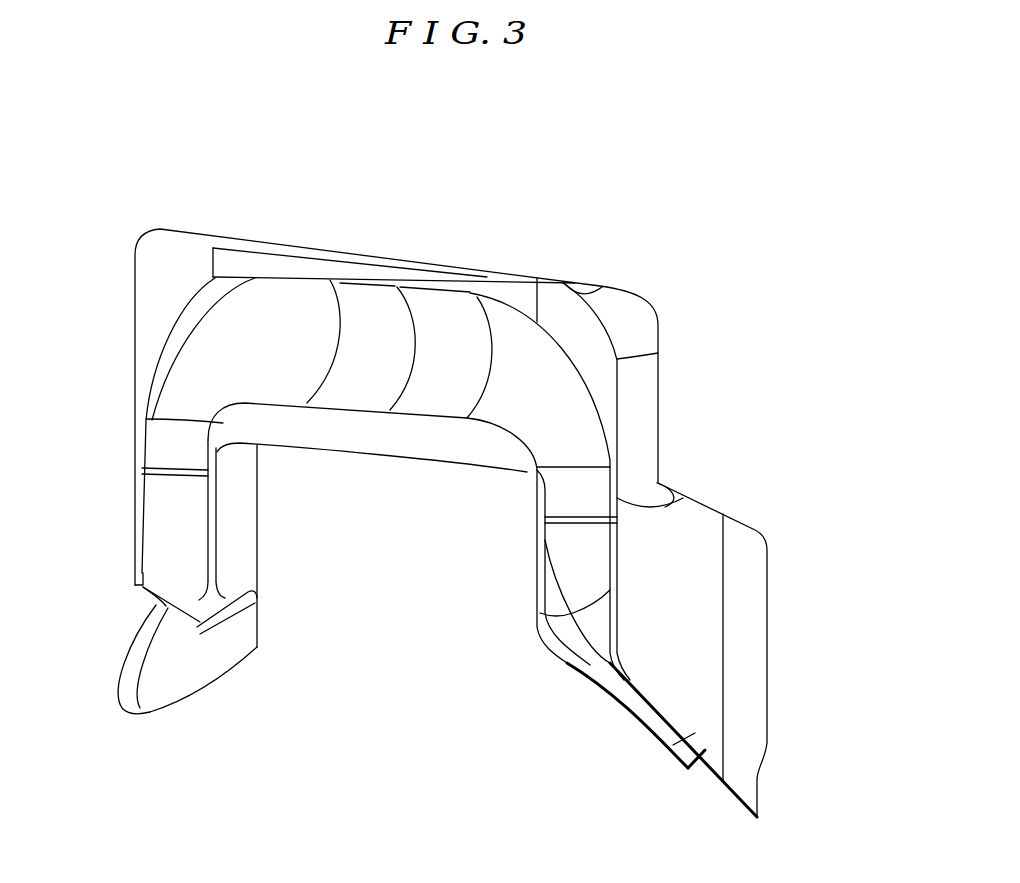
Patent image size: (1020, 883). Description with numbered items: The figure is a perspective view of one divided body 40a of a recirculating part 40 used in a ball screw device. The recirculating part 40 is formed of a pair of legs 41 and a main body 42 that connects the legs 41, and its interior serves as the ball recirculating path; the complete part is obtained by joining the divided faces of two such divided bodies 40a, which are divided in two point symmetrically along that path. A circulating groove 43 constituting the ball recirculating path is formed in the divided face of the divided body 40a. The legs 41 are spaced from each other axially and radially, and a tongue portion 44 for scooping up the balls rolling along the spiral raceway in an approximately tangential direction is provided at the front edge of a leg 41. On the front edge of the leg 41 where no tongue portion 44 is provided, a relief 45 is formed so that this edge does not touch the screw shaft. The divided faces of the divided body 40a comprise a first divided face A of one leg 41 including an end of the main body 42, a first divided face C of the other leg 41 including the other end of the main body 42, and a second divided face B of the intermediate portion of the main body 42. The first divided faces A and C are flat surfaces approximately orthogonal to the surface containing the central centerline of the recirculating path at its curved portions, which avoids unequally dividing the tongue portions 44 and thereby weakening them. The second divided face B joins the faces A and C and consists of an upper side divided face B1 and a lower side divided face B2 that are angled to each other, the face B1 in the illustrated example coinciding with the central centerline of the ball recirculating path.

The recirculating part 40 is at (396, 381).
The divided body 40a is at (500, 273).
The leg 41 is at (270, 452).
The main body 42 is at (788, 285).
The circulating groove 43 is at (290, 333).
The tongue portion 44 is at (208, 648).
The relief 45 is at (668, 742).
The first divided face A is at (150, 289).
The second divided face B is at (445, 174).
The upper side divided face B1 is at (403, 207).
The lower side divided face B2 is at (447, 207).
The first divided face C is at (590, 343).